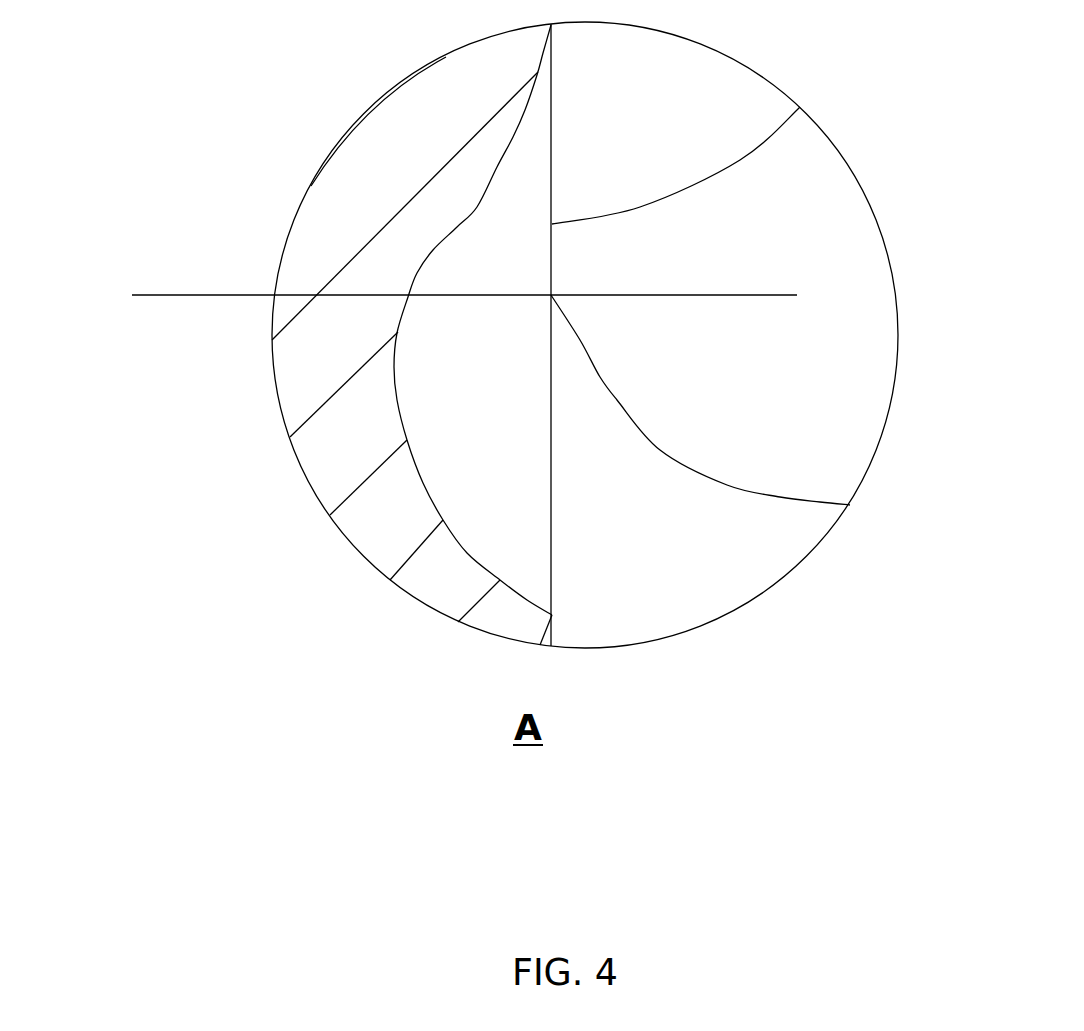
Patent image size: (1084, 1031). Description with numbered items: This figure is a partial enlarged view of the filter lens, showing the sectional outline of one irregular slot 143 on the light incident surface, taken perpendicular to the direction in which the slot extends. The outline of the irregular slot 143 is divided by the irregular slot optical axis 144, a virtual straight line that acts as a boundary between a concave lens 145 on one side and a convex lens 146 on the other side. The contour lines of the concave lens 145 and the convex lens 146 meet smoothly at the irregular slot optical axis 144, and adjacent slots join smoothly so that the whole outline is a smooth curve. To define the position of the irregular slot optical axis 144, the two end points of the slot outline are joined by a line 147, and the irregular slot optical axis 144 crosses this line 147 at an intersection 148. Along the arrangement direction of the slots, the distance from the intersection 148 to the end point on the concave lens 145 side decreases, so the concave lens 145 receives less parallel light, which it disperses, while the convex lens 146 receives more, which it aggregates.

The irregular slot 143 is at (478, 432).
The irregular slot optical axis 144 is at (203, 295).
The concave lens 145 is at (435, 508).
The convex lens 146 is at (513, 137).
The line 147 is at (800, 107).
The intersection 148 is at (850, 505).